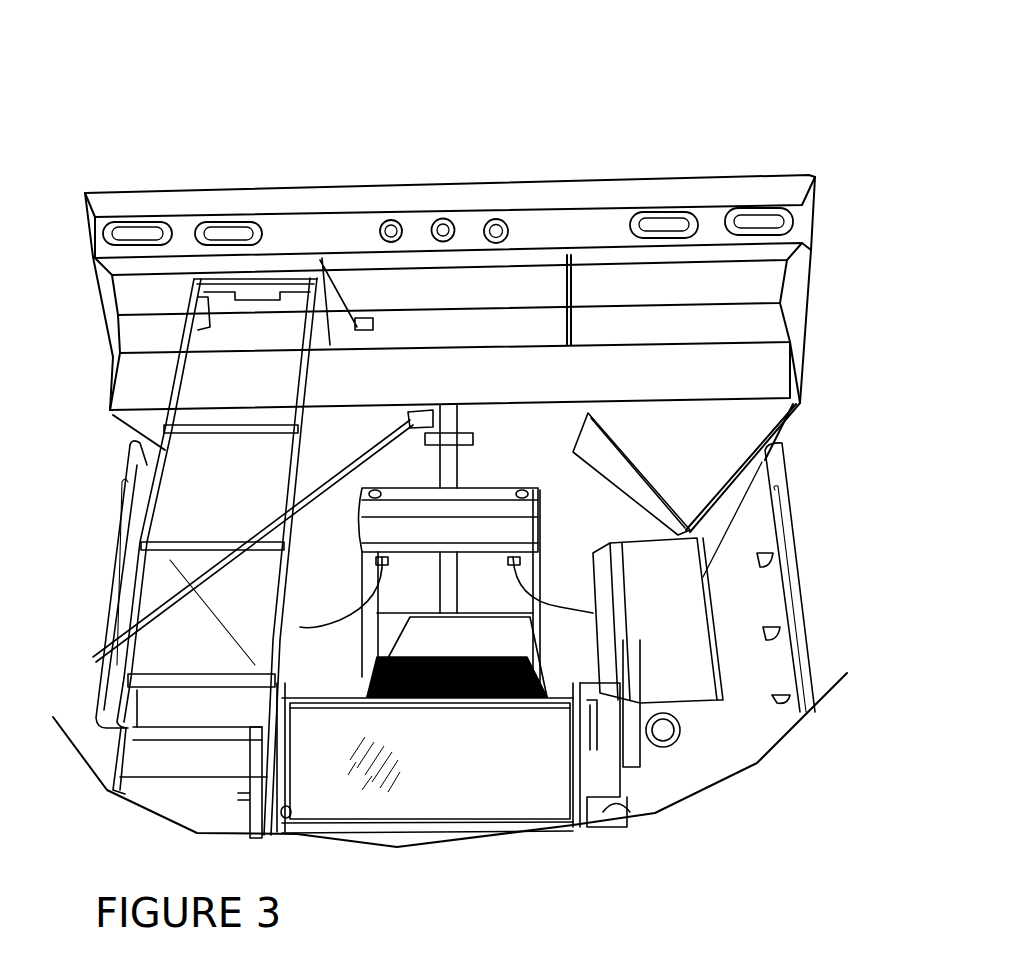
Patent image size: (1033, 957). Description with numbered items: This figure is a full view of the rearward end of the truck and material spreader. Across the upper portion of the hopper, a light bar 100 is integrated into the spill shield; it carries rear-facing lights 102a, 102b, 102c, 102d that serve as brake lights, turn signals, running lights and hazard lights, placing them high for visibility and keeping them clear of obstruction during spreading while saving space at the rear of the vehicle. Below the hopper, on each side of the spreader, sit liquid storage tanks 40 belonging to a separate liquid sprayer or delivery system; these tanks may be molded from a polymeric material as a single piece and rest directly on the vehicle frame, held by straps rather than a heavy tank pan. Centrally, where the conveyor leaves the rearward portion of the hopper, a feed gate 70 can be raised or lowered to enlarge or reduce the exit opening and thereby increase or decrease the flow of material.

The light bar 100 is at (551, 221).
The light 102a is at (753, 211).
The light 102b is at (662, 212).
The light 102c is at (493, 215).
The light 102d is at (426, 222).
The liquid storage tank 40 is at (168, 630).
The feed gate 70 is at (489, 580).